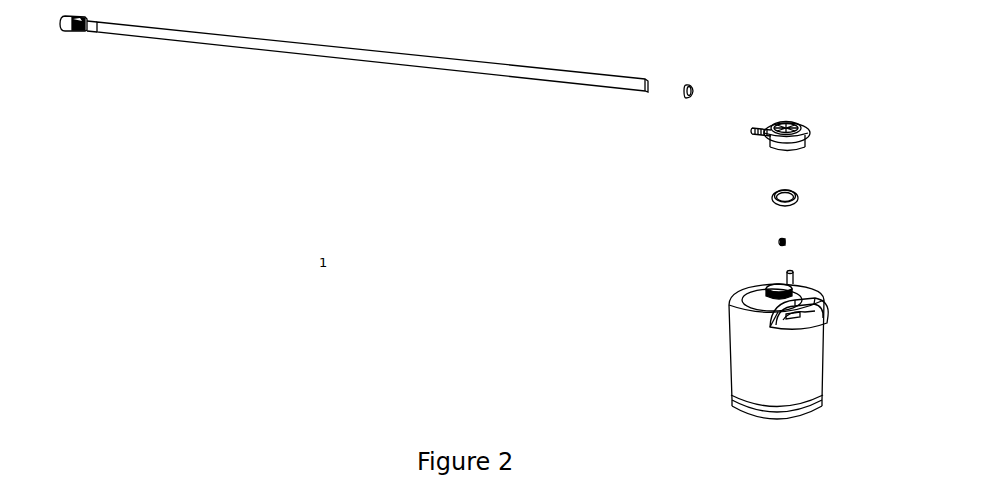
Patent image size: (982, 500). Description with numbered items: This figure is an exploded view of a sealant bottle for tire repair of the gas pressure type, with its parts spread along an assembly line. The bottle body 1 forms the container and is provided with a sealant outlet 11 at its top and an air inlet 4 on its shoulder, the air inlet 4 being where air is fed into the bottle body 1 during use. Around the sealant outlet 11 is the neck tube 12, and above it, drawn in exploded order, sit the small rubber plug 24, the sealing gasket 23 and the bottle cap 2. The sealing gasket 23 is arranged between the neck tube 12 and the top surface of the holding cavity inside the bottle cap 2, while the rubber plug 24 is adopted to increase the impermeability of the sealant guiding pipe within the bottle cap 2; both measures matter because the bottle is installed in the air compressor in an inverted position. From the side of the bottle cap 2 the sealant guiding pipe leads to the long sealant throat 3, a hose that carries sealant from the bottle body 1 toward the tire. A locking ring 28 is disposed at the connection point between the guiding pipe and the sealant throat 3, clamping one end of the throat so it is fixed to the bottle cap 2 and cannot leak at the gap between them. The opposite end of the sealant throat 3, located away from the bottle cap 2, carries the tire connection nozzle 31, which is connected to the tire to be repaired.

The bottle body 1 is at (745, 361).
The bottle cap 2 is at (777, 121).
The sealant throat 3 is at (532, 70).
The air inlet 4 is at (798, 322).
The sealant outlet 11 is at (776, 284).
The neck tube 12 is at (766, 288).
The sealing gasket 23 is at (773, 193).
The rubber plug 24 is at (780, 240).
The locking ring 28 is at (686, 95).
The tire connection nozzle 31 is at (85, 30).